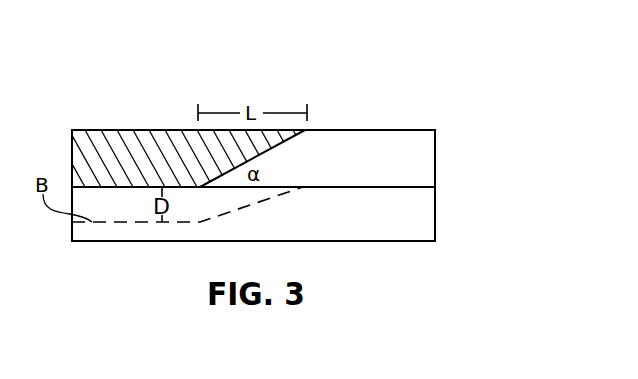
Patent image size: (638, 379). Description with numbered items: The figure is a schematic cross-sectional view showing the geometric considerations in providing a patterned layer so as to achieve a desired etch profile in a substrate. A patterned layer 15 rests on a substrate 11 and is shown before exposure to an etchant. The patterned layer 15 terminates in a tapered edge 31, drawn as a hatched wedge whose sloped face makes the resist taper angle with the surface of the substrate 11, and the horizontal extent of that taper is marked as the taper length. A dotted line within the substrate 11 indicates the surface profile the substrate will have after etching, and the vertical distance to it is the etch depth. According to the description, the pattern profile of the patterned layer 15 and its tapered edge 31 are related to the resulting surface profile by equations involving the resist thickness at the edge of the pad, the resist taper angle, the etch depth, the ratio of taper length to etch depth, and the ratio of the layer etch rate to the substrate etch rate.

The substrate 11 is at (428, 212).
The patterned layer 15 is at (374, 140).
The tapered edge 31 is at (230, 177).